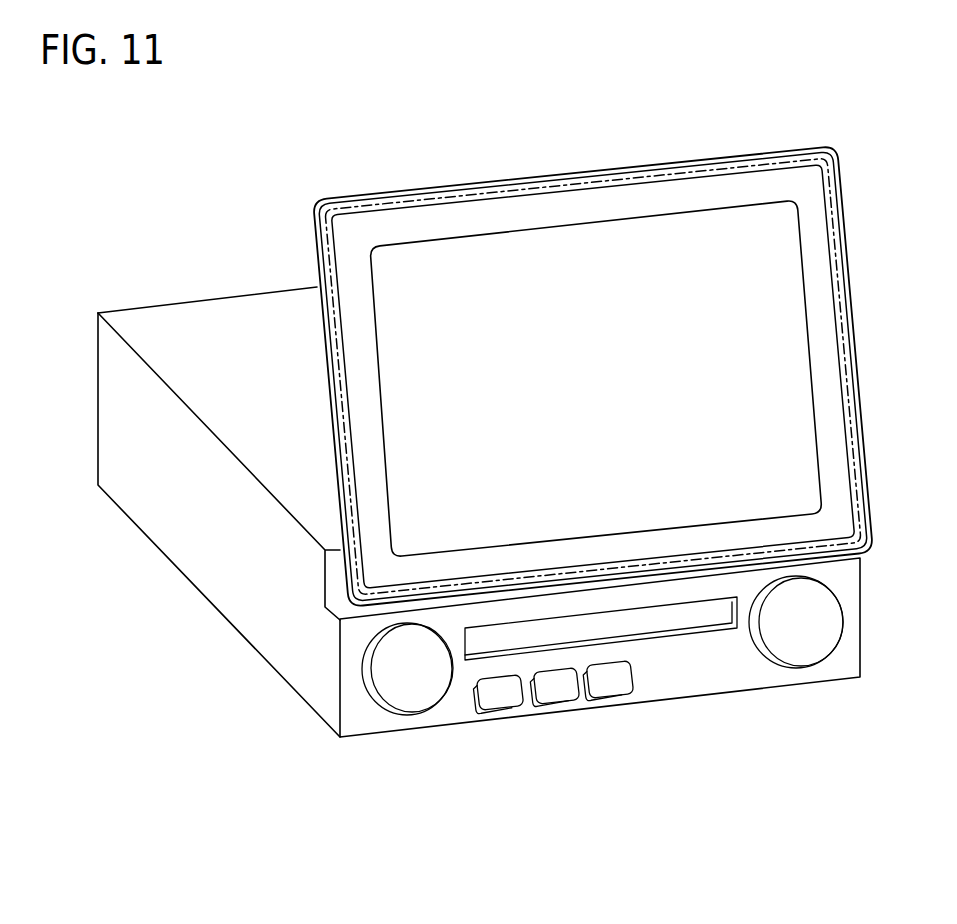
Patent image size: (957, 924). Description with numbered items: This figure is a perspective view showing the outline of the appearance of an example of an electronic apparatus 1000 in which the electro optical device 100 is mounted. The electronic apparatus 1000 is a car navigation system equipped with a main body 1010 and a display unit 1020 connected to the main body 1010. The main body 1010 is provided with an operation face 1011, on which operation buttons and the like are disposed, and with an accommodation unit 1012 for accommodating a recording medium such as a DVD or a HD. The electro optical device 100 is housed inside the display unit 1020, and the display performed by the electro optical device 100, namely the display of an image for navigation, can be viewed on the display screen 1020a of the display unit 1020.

The electronic apparatus 1000 is at (209, 120).
The electro optical device 100 is at (484, 196).
The main body 1010 is at (240, 645).
The operation face 1011 is at (717, 665).
The accommodation unit 1012 is at (524, 633).
The display unit 1020 is at (538, 178).
The display screen 1020a is at (630, 287).